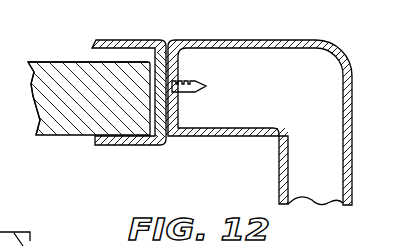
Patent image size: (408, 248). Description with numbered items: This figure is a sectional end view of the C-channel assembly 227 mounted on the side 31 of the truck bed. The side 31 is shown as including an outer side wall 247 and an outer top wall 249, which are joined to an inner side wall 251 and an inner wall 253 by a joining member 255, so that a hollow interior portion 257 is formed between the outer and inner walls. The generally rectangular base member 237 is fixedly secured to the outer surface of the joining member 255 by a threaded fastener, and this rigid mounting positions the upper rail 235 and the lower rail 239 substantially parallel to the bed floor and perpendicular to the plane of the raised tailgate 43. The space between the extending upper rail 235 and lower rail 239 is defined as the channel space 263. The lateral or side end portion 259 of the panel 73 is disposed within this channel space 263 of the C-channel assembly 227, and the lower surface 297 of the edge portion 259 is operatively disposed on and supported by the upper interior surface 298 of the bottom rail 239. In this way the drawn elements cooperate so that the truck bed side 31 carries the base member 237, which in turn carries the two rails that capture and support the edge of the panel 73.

The C-channel assembly 227 is at (280, 111).
The outer top wall 249 is at (311, 40).
The outer side wall 247 is at (380, 125).
The side of the truck bed 31 is at (359, 75).
The hollow interior portion 257 is at (330, 126).
The inner wall 253 is at (205, 137).
The inner side wall 251 is at (272, 190).
The joining member 255 is at (178, 106).
The base member 237 is at (178, 70).
The upper rail 235 is at (126, 97).
The lower rail 239 is at (123, 145).
The lower surface of the edge portion 297 is at (143, 145).
The upper interior surface of the bottom rail 298 is at (138, 134).
The side end portion of the panel 259 is at (75, 104).
The channel space 263 is at (98, 60).
The raised tailgate 43 is at (27, 108).
The panel 73 is at (8, 126).